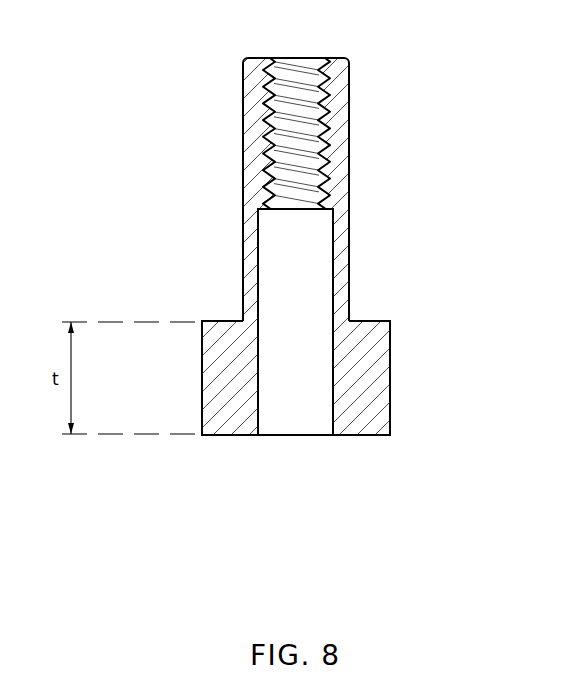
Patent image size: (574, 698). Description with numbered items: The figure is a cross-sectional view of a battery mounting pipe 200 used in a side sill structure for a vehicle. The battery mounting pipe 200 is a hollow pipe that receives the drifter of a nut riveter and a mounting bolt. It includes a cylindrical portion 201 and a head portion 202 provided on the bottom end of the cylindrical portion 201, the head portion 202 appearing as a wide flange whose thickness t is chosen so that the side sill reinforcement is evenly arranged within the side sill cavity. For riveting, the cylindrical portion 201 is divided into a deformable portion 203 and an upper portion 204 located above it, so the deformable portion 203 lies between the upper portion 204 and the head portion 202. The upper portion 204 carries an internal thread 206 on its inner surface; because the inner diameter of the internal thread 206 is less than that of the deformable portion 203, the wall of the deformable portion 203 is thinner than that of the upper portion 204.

The battery mounting pipe 200 is at (146, 67).
The cylindrical portion 201 is at (200, 192).
The head portion 202 is at (210, 377).
The deformable portion 203 is at (357, 208).
The upper portion 204 is at (347, 58).
The internal thread 206 is at (318, 58).